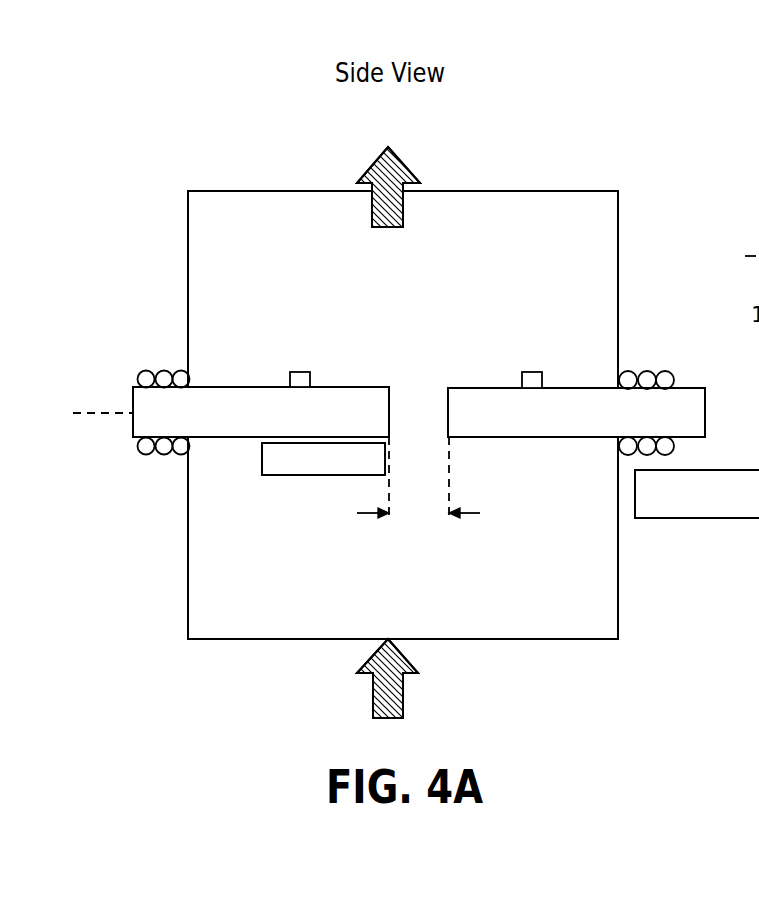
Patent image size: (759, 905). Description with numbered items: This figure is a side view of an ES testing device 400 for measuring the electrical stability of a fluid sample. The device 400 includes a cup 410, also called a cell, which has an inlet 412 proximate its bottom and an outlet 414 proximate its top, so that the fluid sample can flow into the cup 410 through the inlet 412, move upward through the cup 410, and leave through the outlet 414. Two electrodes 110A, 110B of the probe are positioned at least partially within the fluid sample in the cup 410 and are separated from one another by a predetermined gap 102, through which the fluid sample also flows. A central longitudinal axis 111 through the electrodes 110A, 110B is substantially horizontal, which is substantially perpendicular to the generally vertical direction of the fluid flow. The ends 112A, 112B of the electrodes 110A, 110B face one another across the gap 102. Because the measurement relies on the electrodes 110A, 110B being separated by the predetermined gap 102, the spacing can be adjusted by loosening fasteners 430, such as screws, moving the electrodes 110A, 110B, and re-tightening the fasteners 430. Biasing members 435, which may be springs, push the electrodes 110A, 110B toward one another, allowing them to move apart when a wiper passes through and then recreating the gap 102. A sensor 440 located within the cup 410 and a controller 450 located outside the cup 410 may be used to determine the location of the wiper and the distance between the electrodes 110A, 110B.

The ES testing device 400 is at (214, 90).
The cup 410 is at (188, 268).
The outlet 414 is at (366, 172).
The inlet 412 is at (368, 692).
The electrode 110A is at (133, 408).
The electrode 110B is at (707, 405).
The central longitudinal axis 111 is at (93, 415).
The end of electrode 112A is at (391, 405).
The end of electrode 112B is at (447, 405).
The fasteners 430 is at (300, 370).
The biasing members 435 is at (170, 452).
The sensor 440 is at (262, 454).
The predetermined gap 102 is at (468, 513).
The controller 450 is at (757, 520).